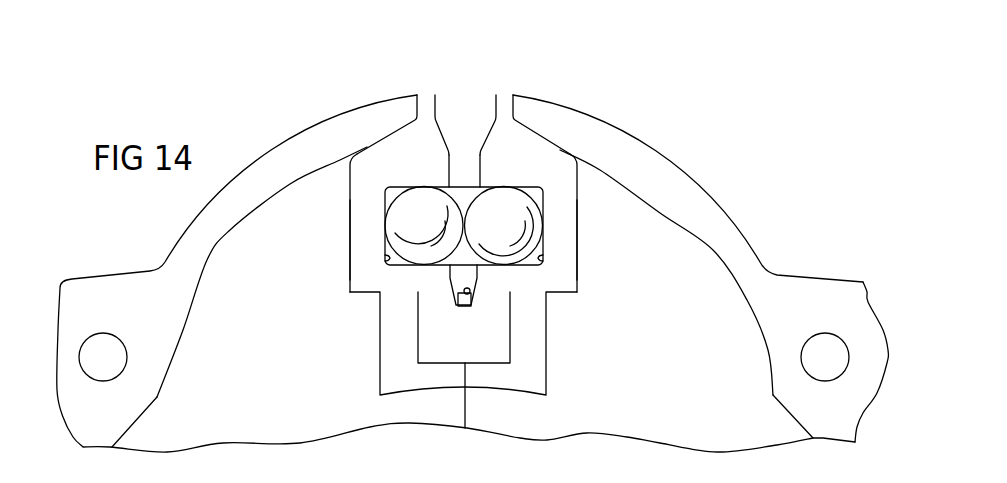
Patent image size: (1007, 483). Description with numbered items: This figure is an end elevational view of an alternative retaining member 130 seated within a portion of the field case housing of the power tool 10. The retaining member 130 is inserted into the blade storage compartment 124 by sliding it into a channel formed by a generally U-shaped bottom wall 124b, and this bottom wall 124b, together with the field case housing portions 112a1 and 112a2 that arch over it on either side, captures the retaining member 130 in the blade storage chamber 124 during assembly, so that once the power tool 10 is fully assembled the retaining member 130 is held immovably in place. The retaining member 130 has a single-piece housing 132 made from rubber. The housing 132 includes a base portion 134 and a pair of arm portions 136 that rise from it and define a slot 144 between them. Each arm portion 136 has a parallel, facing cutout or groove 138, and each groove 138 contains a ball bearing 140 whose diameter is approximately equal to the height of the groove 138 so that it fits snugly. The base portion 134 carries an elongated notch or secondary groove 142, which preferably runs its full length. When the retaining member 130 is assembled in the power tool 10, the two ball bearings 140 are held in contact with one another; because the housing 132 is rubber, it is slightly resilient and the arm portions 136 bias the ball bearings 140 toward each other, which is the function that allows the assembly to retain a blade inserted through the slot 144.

The power tool 10 is at (144, 220).
The field case housing portion 112a1 is at (342, 145).
The field case housing portion 112a2 is at (578, 132).
The blade storage compartment 124 is at (463, 96).
The bottom wall 124b is at (510, 403).
The retaining member 130 is at (330, 291).
The housing 132 is at (367, 294).
The base portion 134 is at (443, 348).
The arm portions 136 is at (372, 229).
The grooves 138 is at (385, 250).
The ball bearings 140 is at (415, 223).
The secondary groove 142 is at (470, 300).
The slot 144 is at (466, 180).